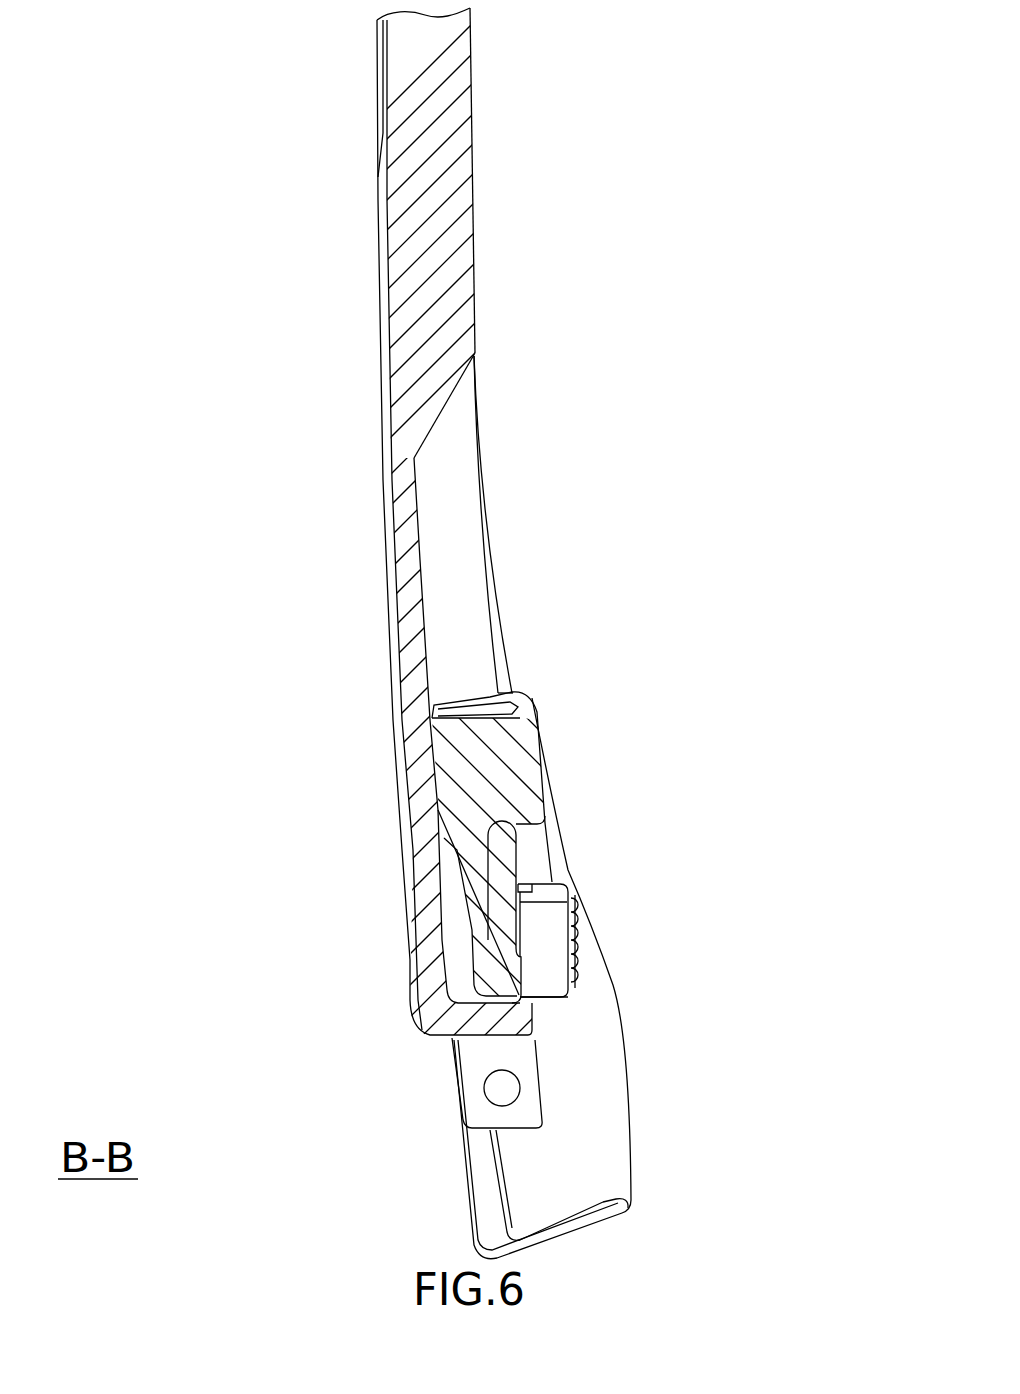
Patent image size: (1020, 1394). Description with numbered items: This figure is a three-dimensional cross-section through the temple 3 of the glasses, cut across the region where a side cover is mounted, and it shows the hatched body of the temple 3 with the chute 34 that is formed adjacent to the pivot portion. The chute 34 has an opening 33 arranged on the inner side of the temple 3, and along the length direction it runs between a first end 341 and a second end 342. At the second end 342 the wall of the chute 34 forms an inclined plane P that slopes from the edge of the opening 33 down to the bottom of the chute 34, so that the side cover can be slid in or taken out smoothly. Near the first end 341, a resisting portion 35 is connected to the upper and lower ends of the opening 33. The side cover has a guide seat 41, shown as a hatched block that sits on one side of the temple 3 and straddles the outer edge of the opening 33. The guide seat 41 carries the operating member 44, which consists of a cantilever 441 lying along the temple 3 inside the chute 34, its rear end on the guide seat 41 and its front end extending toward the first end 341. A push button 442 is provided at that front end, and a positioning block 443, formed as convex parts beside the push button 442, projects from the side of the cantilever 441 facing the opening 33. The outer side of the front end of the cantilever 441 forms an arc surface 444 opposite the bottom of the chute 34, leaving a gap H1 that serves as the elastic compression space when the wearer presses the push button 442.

The temple 3 is at (405, 127).
The second end 342 is at (476, 362).
The inclined plane P is at (443, 413).
The chute 34 is at (437, 615).
The opening 33 is at (487, 663).
The guide seat 41 is at (540, 748).
The resisting portion 35 is at (505, 863).
The arc surface 444 is at (475, 895).
The operating member 44 is at (660, 941).
The cantilever 441 is at (505, 890).
The push button 442 is at (558, 937).
The positioning block 443 is at (513, 977).
The first end 341 is at (488, 1010).
The gap H1 is at (542, 969).